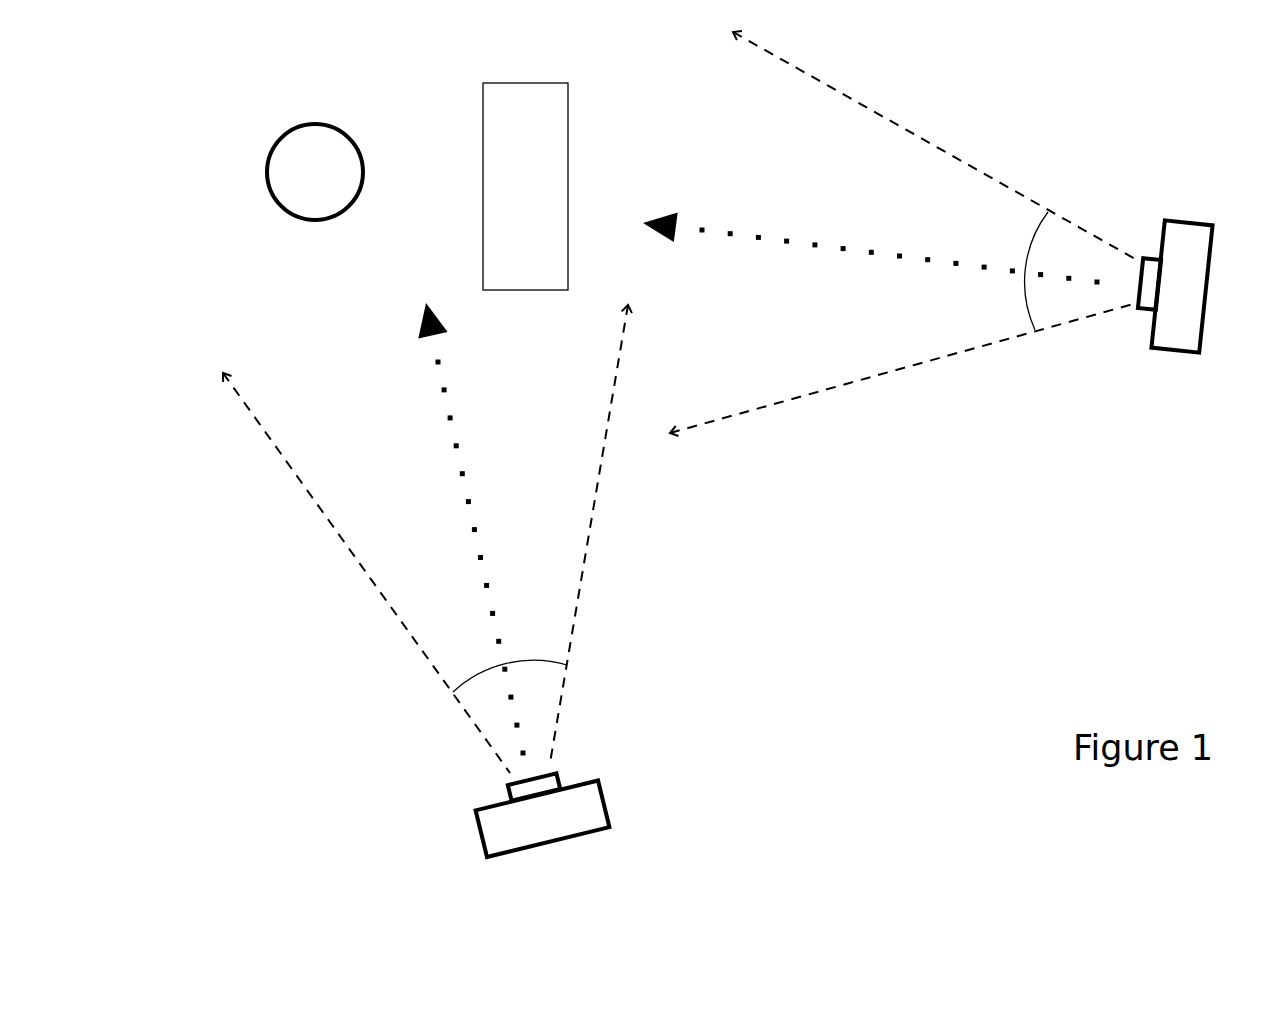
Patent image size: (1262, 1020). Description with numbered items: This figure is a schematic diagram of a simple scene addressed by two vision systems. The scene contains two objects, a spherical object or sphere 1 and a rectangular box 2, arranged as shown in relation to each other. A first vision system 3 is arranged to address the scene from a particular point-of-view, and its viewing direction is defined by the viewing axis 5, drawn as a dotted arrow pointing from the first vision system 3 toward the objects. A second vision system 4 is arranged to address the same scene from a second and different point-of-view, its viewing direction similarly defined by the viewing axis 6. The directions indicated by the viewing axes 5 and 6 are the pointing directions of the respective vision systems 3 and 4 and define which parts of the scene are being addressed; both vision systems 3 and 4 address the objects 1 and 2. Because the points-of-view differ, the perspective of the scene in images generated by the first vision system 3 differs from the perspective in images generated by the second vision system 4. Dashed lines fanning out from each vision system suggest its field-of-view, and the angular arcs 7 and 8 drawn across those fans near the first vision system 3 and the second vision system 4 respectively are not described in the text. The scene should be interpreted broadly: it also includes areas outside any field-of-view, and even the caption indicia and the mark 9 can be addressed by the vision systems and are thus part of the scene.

The sphere 1 is at (315, 140).
The box 2 is at (513, 103).
The first vision system 3 is at (587, 815).
The second vision system 4 is at (1185, 238).
The viewing axis 5 is at (480, 568).
The viewing axis 6 is at (852, 250).
The field of view angle of first camera 7 is at (498, 660).
The field of view angle of second camera 8 is at (1020, 275).
The reference mark X 9 is at (1077, 670).